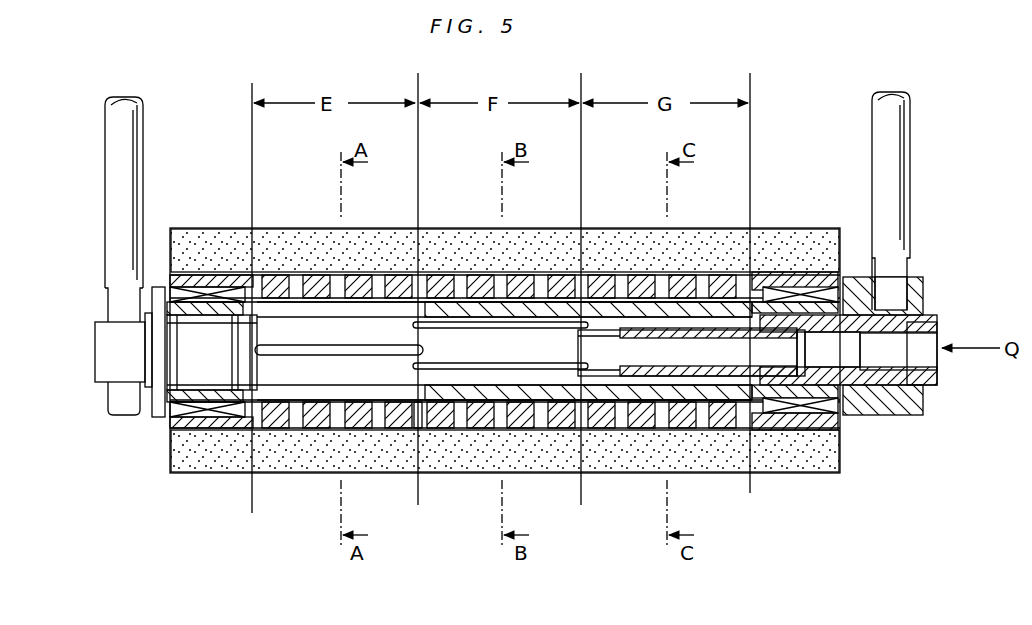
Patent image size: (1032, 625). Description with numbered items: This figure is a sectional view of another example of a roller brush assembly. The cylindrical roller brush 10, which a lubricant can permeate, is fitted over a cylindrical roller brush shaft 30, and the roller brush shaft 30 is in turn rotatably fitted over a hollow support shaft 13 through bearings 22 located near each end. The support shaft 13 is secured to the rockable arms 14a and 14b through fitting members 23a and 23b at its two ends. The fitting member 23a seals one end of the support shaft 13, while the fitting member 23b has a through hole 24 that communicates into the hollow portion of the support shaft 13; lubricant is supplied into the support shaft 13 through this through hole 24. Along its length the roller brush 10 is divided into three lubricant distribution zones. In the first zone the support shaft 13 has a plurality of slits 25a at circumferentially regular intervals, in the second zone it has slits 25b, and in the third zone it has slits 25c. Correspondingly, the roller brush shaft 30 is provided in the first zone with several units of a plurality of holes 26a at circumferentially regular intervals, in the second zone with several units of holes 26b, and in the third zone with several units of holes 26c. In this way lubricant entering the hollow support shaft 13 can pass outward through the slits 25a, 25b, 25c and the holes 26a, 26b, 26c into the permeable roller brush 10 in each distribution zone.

The roller brush 10 is at (754, 226).
The support shaft 13 is at (562, 398).
The rockable arm 14a is at (105, 160).
The rockable arm 14b is at (911, 140).
The bearings 22 is at (197, 278).
The fitting member 23a is at (95, 340).
The fitting member 23b is at (925, 285).
The through hole 24 is at (880, 365).
The slits 25a is at (299, 320).
The slits 25b is at (472, 365).
The slits 25c is at (612, 375).
The holes 26a is at (255, 276).
The holes 26b is at (545, 276).
The holes 26c is at (707, 276).
The roller brush shaft 30 is at (440, 428).